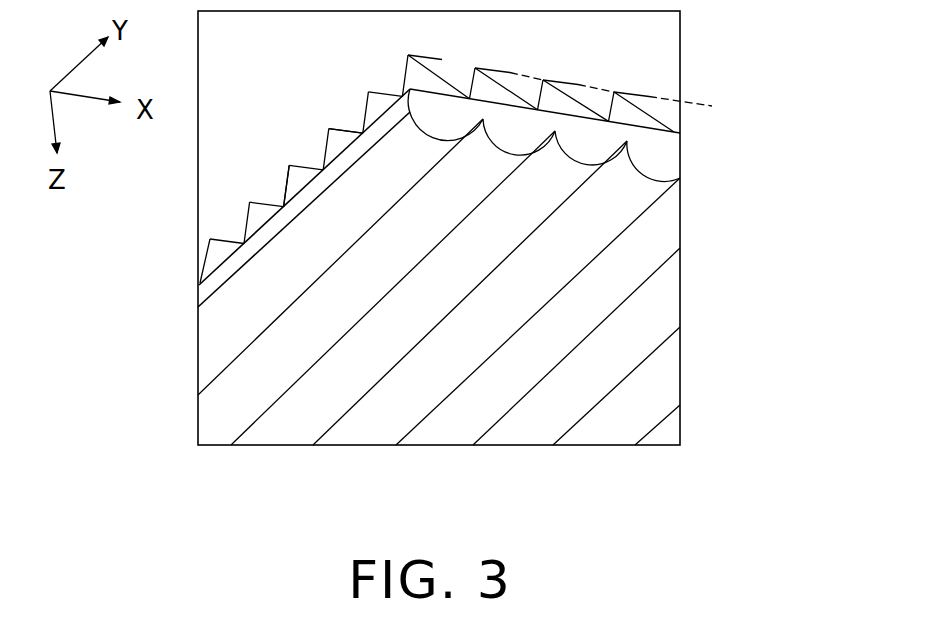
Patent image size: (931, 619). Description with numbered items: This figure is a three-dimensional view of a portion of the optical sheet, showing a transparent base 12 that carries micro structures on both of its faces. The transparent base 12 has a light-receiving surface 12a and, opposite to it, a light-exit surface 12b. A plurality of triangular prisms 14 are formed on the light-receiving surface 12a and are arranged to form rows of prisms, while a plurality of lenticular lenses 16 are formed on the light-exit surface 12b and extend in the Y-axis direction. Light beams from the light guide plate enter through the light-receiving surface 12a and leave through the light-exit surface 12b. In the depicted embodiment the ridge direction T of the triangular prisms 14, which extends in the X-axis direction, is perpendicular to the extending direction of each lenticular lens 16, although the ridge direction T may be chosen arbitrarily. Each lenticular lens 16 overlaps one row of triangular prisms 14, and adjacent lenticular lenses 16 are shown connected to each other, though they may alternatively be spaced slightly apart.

The transparent base 12 is at (215, 283).
The light-receiving surface 12a is at (287, 203).
The light-exit surface 12b is at (338, 173).
The triangular prisms 14 is at (437, 72).
The ridge direction T is at (622, 93).
The lenticular lenses 16 is at (667, 151).